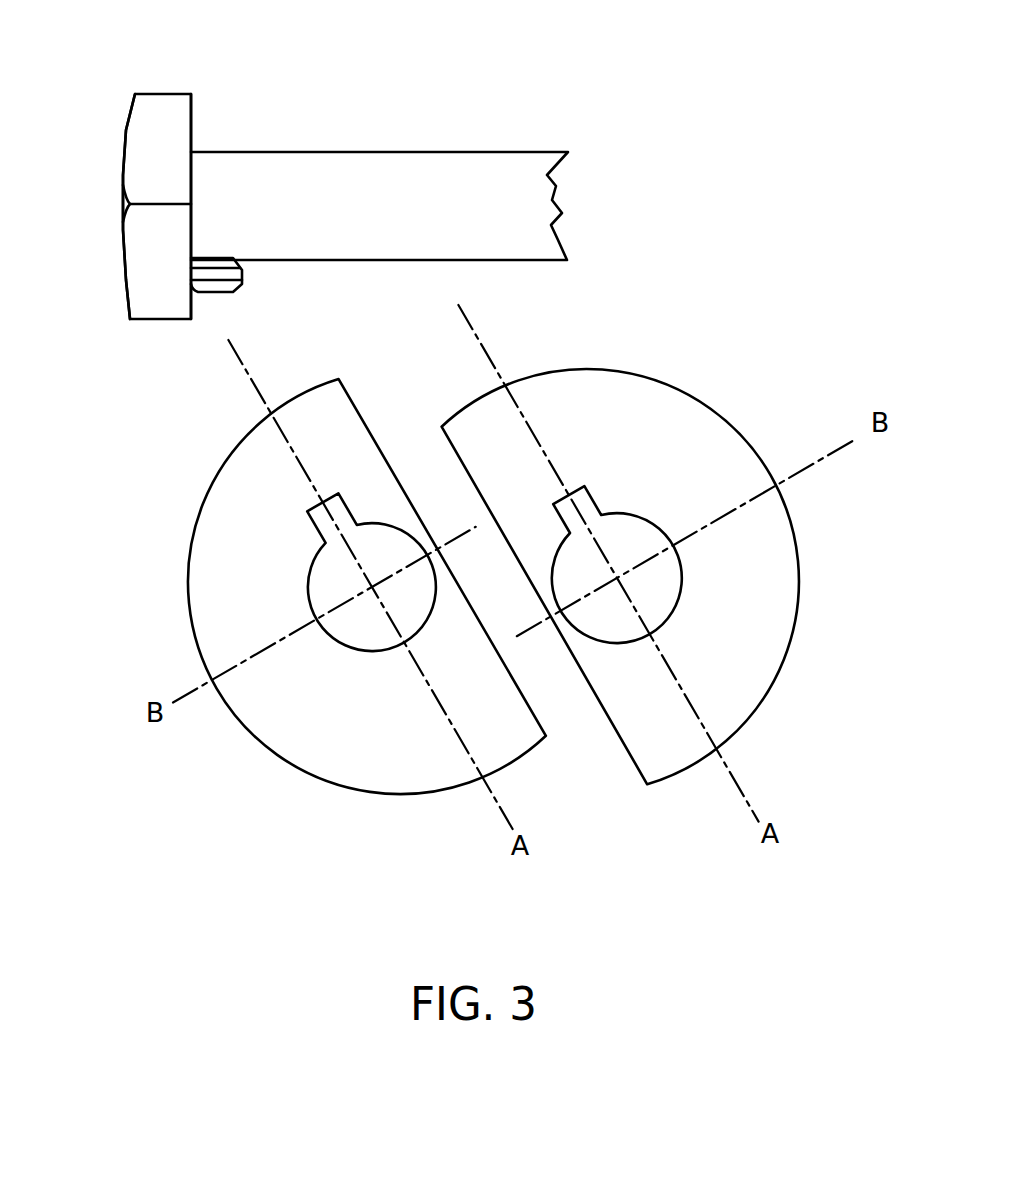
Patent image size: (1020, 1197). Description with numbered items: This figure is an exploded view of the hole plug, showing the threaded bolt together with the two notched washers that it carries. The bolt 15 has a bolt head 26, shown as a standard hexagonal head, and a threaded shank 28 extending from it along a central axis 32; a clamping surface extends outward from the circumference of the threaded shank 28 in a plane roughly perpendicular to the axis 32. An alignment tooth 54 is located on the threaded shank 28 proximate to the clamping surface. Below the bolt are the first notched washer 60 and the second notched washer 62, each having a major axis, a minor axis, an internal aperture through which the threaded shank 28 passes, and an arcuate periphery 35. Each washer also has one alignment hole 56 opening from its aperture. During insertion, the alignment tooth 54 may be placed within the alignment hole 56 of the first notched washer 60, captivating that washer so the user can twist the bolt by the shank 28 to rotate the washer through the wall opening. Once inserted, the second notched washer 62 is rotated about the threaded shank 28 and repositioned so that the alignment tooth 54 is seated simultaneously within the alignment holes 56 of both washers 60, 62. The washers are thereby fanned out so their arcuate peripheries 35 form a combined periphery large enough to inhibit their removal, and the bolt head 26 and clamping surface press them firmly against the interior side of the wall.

The bolt 15 is at (172, 93).
The bolt head 26 is at (127, 308).
The axis 32 is at (193, 124).
The threaded shank 28 is at (512, 151).
The alignment tooth 54 is at (217, 293).
The arcuate periphery 35 is at (530, 610).
The alignment hole 56 is at (345, 502).
The first notched washer 60 is at (797, 553).
The second notched washer 62 is at (268, 743).